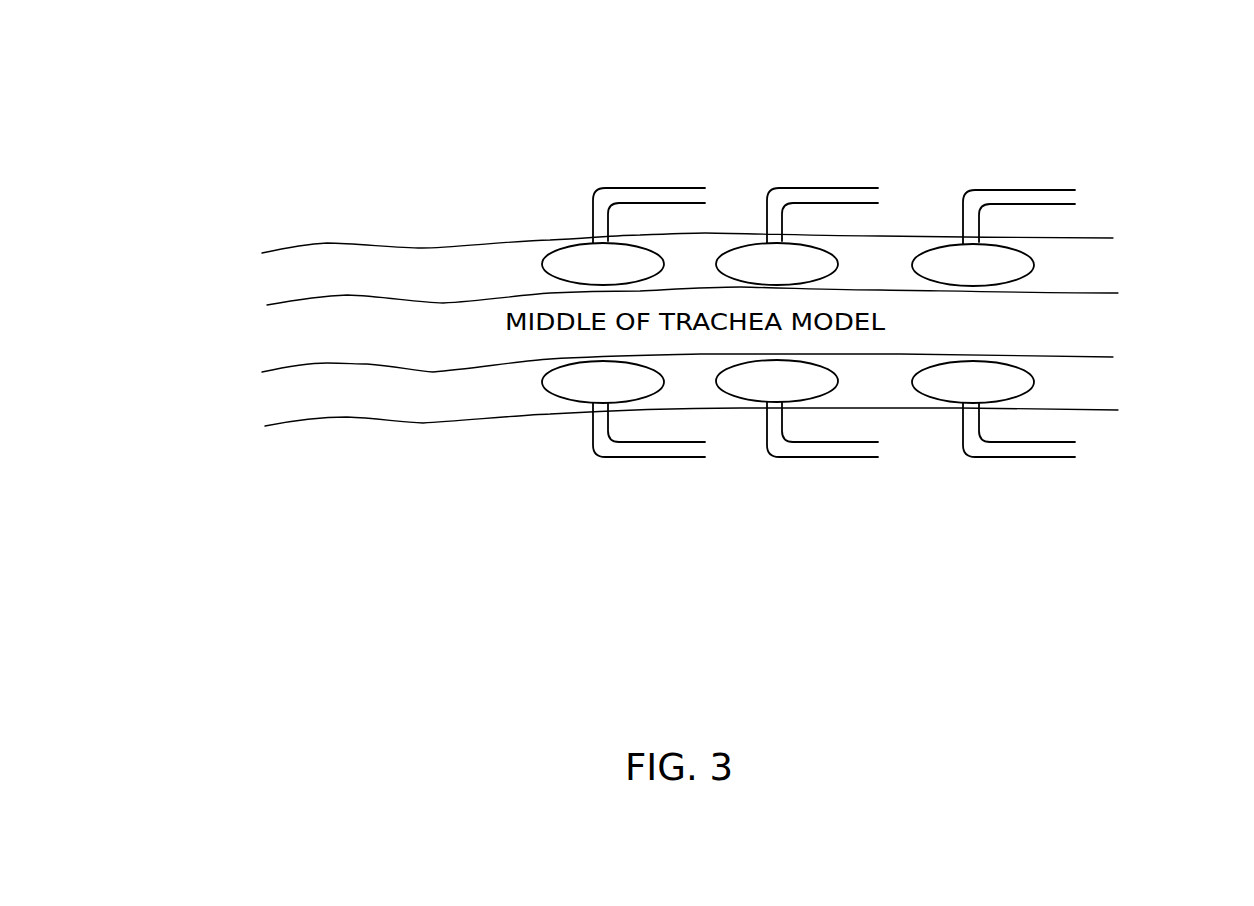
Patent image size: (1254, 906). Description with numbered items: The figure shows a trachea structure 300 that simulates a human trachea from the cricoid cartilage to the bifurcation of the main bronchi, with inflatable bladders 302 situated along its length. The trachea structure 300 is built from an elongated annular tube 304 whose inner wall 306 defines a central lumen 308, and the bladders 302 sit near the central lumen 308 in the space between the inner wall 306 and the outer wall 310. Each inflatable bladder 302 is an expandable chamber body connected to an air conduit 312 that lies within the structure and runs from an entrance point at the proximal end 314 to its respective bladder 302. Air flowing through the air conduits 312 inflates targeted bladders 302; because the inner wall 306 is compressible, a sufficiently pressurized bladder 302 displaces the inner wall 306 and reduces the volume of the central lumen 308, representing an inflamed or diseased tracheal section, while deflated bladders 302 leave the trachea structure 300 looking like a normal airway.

The trachea structure 300 is at (1104, 90).
The inflatable bladder 302 is at (581, 277).
The elongated annular tube 304 is at (258, 282).
The inner wall 306 is at (288, 304).
The central lumen 308 is at (1087, 330).
The outer wall 310 is at (422, 247).
The air conduit 312 is at (657, 188).
The proximal end 314 is at (1100, 238).